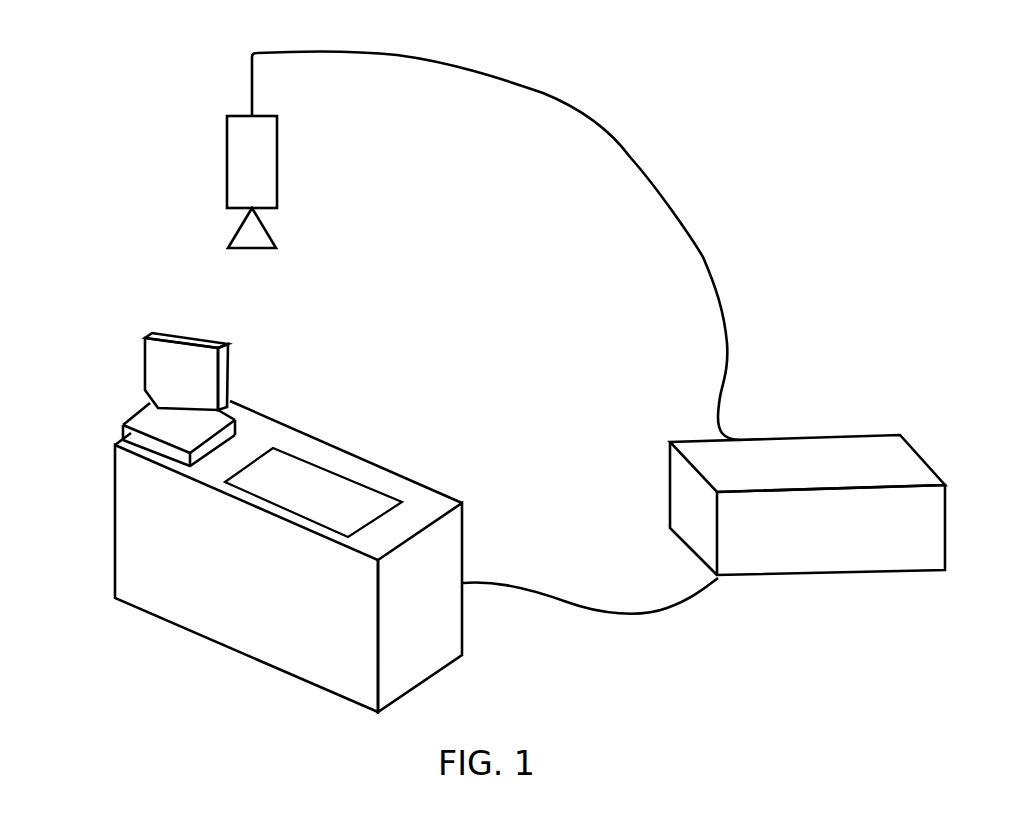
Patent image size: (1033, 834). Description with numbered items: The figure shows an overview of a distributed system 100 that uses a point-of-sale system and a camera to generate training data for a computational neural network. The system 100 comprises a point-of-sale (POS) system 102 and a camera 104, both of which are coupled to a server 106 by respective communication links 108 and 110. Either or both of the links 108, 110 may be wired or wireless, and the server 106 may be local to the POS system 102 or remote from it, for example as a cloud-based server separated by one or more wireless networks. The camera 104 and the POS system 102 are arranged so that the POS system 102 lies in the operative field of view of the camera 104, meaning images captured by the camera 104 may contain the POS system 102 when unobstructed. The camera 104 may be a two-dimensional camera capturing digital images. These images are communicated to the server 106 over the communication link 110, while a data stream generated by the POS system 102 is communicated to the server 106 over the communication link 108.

The system 100 is at (823, 156).
The point-of-sale (POS) system 102 is at (117, 528).
The camera 104 is at (227, 163).
The server 106 is at (845, 436).
The communication link 108 is at (573, 607).
The communication link 110 is at (548, 94).